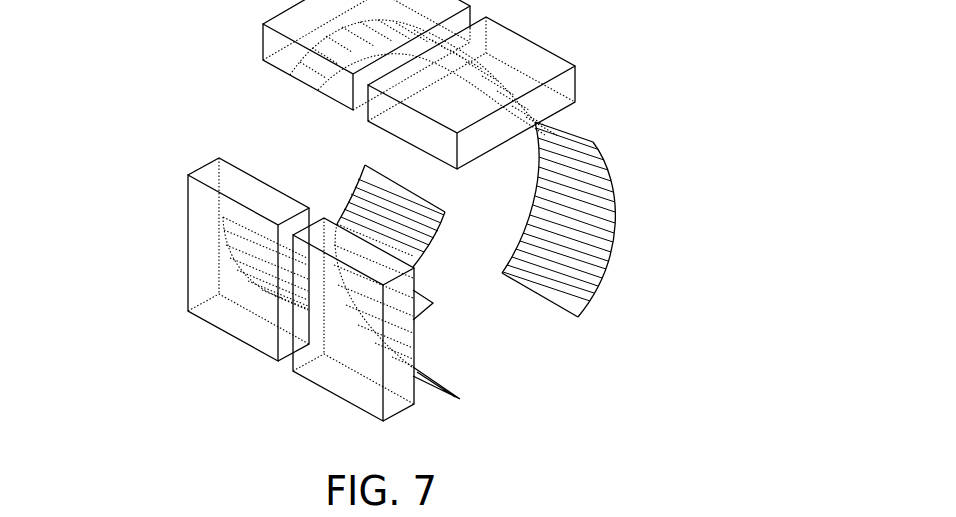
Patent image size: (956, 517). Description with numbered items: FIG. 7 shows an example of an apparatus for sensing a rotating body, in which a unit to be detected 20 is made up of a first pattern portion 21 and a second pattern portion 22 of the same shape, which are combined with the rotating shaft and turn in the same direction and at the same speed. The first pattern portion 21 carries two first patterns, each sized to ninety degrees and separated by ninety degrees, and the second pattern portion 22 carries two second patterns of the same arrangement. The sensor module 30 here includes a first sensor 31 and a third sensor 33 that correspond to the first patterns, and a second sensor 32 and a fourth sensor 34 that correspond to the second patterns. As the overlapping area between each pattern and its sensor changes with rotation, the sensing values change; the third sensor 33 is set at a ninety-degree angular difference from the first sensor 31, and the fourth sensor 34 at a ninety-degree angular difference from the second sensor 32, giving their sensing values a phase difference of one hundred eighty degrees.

The unit to be detected 20 is at (663, 353).
The first pattern portion 21 is at (433, 303).
The second pattern portion 22 is at (450, 390).
The sensor module 30 is at (92, 35).
The first sensor 31 is at (195, 202).
The second sensor 32 is at (340, 387).
The third sensor 33 is at (283, 63).
The fourth sensor 34 is at (403, 133).